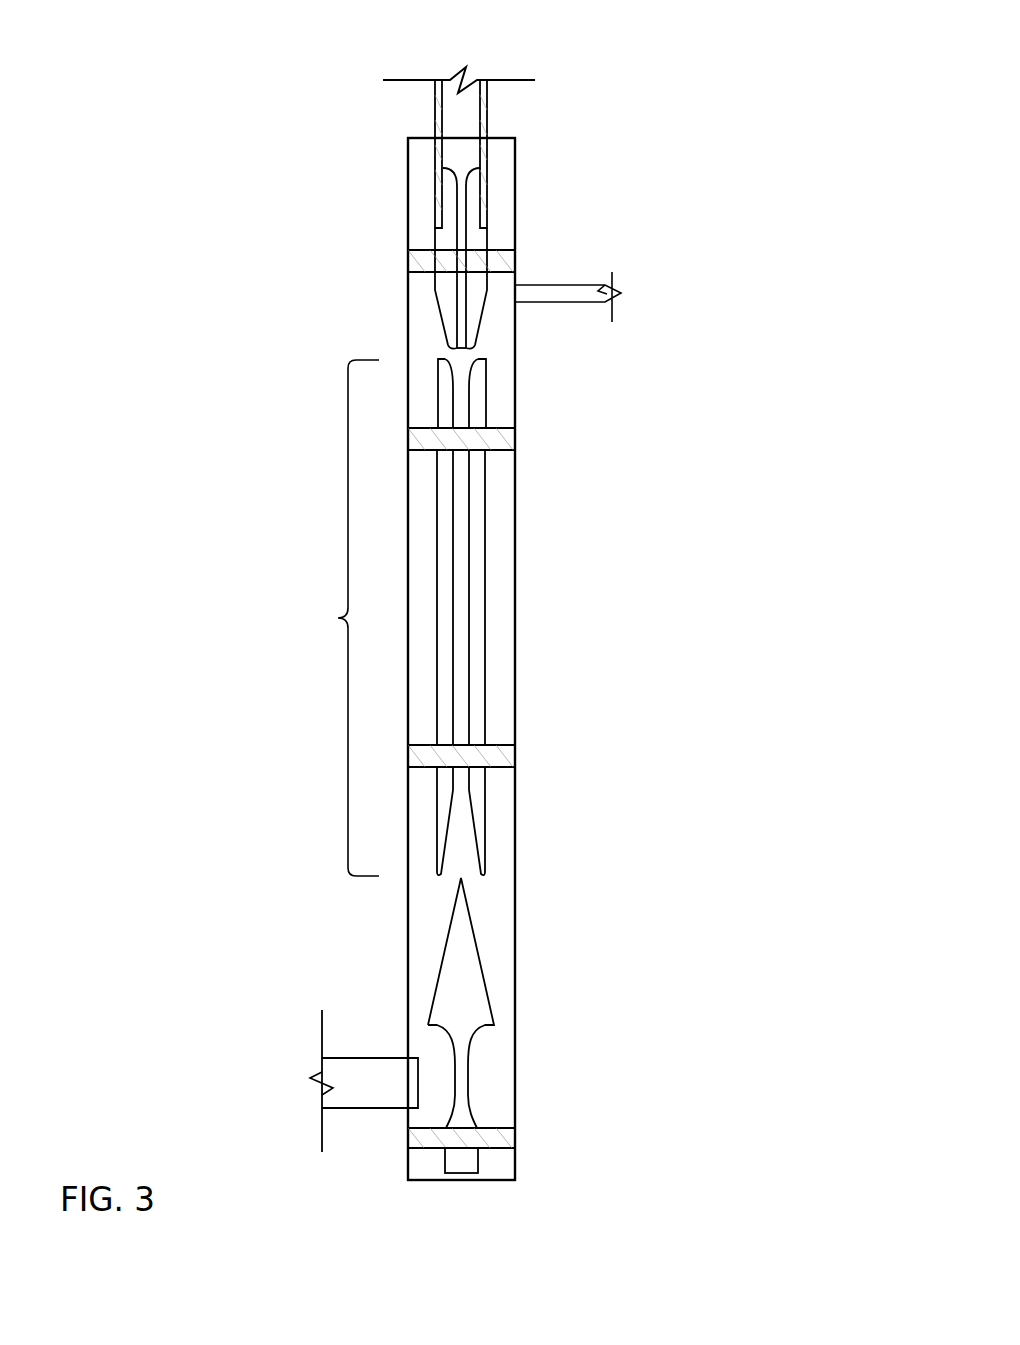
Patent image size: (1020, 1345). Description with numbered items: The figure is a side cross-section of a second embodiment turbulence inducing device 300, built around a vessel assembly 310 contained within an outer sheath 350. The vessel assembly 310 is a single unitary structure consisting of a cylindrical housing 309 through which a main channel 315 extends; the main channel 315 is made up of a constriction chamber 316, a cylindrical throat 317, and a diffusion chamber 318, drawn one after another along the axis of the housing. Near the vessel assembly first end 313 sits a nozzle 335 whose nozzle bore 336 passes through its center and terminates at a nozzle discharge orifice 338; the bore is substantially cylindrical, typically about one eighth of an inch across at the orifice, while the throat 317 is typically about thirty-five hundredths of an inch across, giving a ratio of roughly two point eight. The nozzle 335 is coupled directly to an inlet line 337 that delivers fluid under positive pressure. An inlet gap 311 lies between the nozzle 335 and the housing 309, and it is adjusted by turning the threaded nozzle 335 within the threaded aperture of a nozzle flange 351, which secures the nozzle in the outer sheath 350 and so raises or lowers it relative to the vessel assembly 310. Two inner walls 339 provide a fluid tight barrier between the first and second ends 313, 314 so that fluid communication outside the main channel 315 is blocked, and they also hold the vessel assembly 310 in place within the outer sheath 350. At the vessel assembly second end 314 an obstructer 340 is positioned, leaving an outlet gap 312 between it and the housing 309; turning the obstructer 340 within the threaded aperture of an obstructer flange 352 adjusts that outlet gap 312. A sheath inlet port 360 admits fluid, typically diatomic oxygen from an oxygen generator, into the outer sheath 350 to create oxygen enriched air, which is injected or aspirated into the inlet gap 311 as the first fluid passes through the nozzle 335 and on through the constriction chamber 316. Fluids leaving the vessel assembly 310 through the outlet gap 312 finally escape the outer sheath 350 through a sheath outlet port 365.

The turbulence inducing device 300 is at (584, 602).
The cylindrical housing 309 is at (487, 722).
The vessel assembly 310 is at (335, 618).
The inlet gap 311 is at (439, 349).
The outlet gap 312 is at (479, 880).
The vessel assembly first end 313 is at (478, 360).
The vessel assembly second end 314 is at (488, 877).
The main channel 315 is at (464, 617).
The constriction chamber 316 is at (466, 380).
The cylindrical throat 317 is at (466, 545).
The diffusion chamber 318 is at (462, 832).
The nozzle 335 is at (434, 280).
The nozzle bore 336 is at (462, 239).
The inlet line 337 is at (488, 112).
The nozzle discharge orifice 338 is at (462, 350).
The inner walls 339 is at (516, 436).
The obstructer 340 is at (490, 978).
The outer sheath 350 is at (408, 930).
The nozzle flange 351 is at (408, 252).
The obstructer flange 352 is at (508, 1136).
The sheath inlet port 360 is at (587, 283).
The sheath outlet port 365 is at (358, 1108).